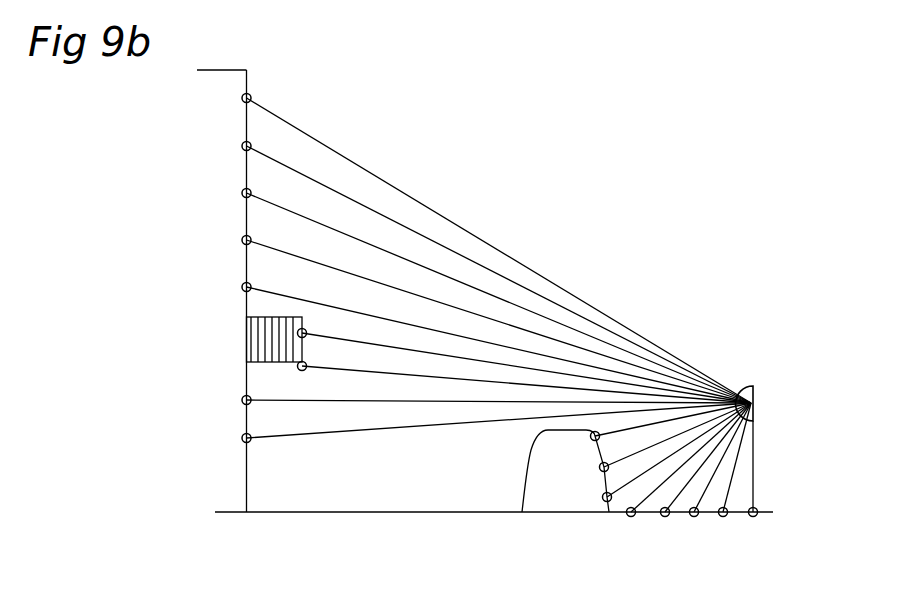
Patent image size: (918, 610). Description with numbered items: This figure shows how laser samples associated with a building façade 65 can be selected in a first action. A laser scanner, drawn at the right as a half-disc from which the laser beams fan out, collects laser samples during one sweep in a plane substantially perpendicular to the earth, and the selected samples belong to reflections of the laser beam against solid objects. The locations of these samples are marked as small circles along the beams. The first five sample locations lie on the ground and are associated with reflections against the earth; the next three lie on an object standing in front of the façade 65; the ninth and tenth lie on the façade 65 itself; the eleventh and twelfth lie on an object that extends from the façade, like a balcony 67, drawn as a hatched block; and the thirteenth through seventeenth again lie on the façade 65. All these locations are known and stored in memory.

The façade 65 is at (246, 82).
The balcony 67 is at (253, 325).